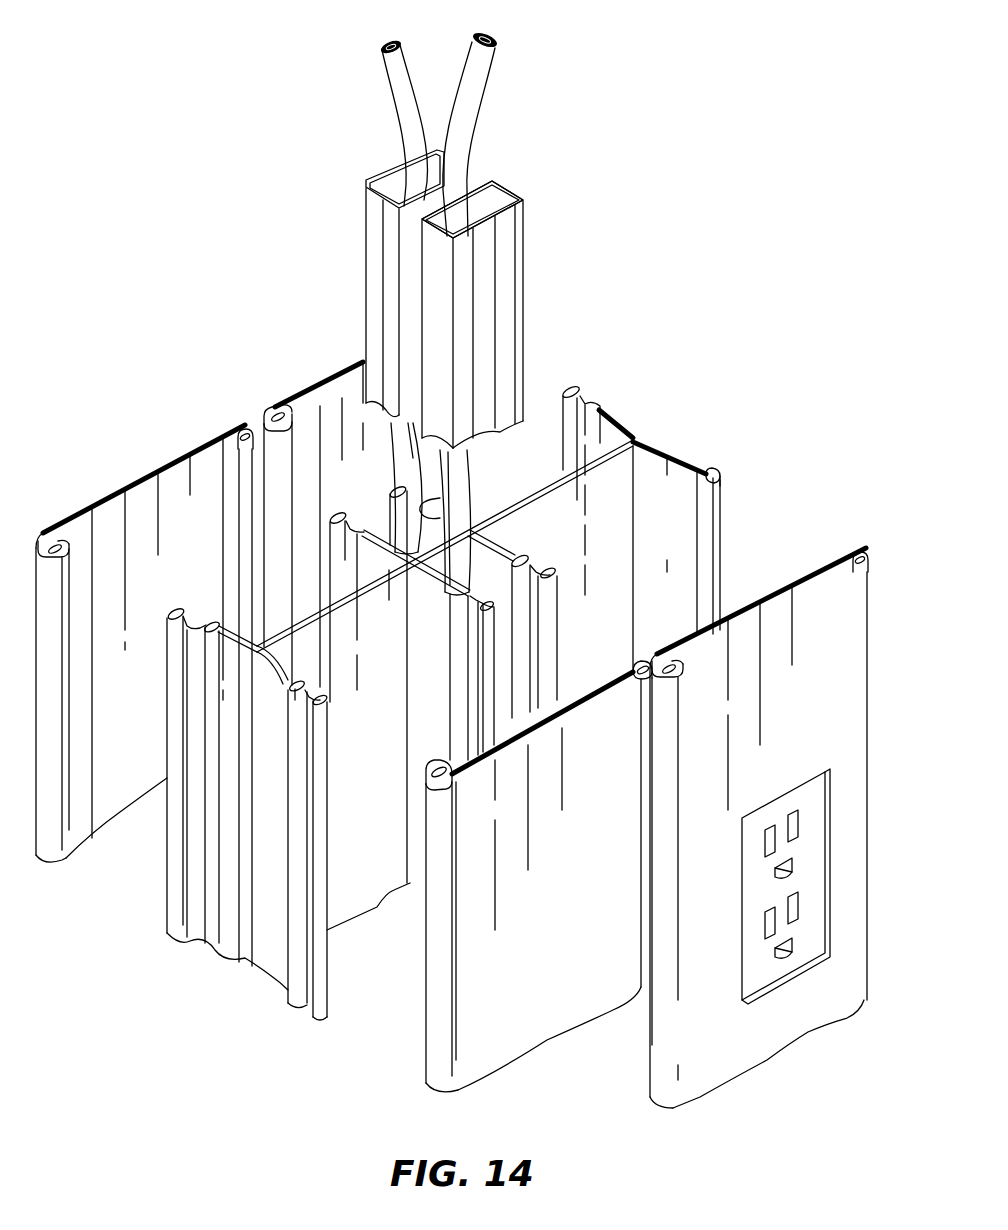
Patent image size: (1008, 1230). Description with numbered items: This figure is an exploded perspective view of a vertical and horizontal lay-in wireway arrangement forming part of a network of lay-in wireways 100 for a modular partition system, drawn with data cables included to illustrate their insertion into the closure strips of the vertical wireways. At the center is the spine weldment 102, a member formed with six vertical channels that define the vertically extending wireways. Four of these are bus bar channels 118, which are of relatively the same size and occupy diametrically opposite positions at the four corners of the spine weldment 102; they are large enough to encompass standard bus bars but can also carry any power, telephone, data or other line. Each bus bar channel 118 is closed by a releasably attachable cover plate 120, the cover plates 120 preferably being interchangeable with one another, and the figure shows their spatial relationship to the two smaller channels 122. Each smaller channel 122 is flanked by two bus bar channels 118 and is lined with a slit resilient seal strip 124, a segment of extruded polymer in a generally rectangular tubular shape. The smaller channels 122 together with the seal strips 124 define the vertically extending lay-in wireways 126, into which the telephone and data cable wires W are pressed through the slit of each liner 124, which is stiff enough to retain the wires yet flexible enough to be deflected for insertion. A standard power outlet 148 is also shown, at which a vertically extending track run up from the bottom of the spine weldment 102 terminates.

The network of lay-in wireways 100 is at (235, 247).
The spine weldment 102 is at (233, 948).
The bus bar channels 118 is at (551, 390).
The cover plate 120 is at (105, 497).
The smaller channel 122 is at (510, 548).
The seal strip 124 is at (522, 287).
The lay-in wireway 126 is at (502, 180).
The outlet 148 is at (750, 899).
The wire W is at (486, 84).